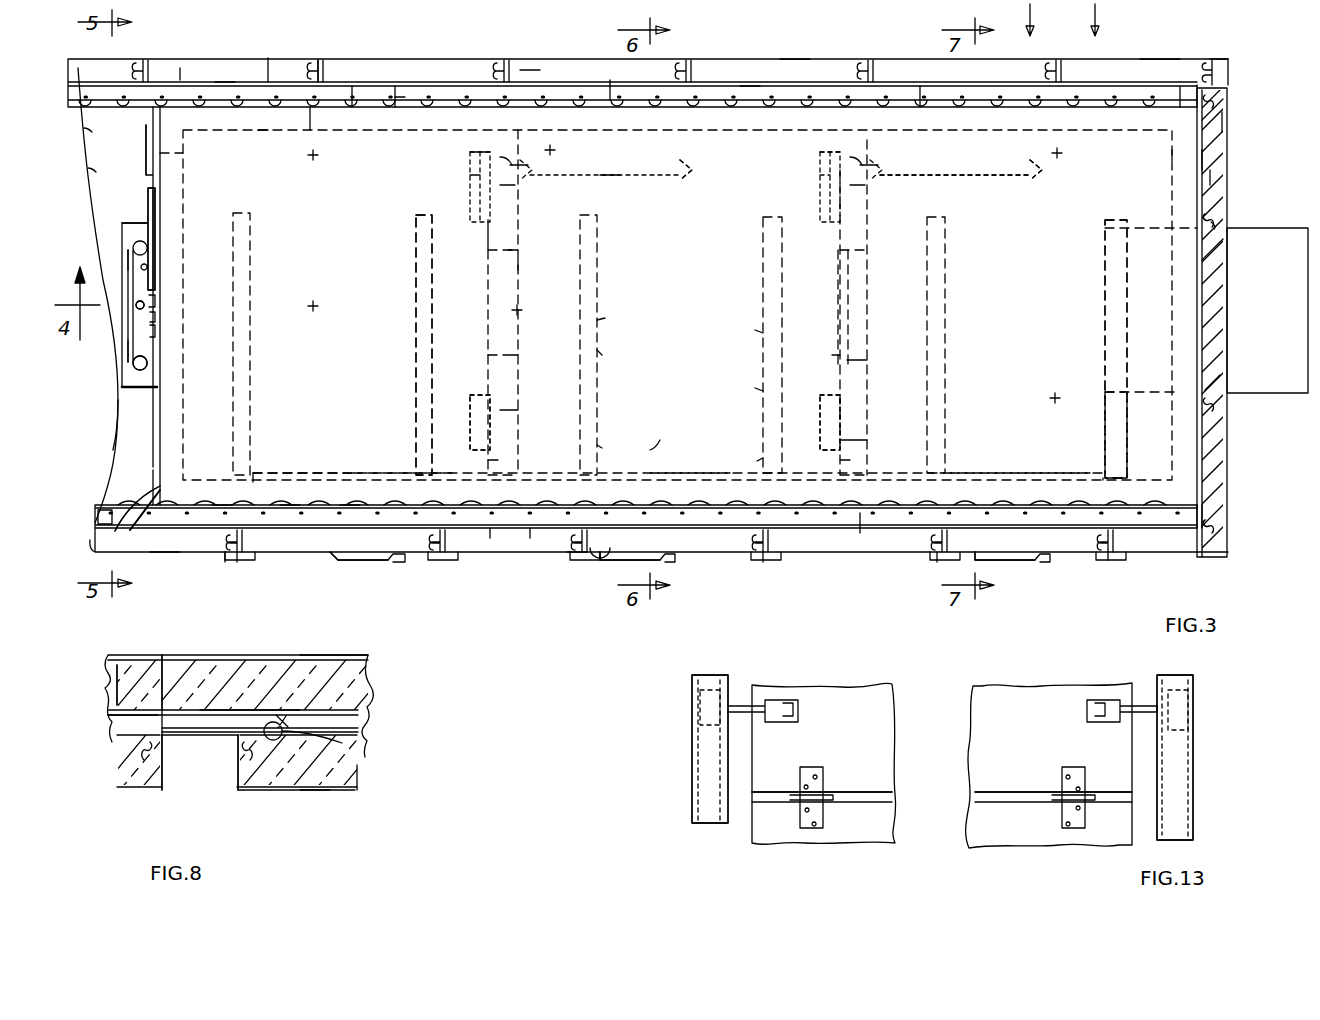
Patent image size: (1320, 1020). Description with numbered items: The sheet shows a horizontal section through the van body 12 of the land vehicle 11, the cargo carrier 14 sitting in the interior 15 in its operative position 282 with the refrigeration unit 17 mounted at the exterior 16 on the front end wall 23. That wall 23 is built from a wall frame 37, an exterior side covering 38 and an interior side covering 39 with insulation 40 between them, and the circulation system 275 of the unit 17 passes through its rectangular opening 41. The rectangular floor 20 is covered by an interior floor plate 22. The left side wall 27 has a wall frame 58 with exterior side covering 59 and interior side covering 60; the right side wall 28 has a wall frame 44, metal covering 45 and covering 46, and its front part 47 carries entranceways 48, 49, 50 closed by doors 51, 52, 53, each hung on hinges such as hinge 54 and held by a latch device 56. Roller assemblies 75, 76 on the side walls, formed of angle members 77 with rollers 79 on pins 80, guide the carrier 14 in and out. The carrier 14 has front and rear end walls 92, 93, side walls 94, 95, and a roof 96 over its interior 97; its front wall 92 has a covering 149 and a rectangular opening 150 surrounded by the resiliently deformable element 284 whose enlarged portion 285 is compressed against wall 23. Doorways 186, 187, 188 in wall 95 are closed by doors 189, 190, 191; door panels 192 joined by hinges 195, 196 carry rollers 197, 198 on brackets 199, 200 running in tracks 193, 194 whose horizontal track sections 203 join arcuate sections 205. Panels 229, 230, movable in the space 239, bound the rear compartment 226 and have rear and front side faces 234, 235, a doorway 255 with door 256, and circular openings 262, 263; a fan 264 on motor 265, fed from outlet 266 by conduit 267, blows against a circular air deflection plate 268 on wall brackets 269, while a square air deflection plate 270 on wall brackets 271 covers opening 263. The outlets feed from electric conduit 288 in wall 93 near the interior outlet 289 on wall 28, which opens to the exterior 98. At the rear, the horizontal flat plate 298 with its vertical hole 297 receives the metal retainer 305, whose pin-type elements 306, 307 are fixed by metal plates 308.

In FIG. 3, the land vehicle 11 is at (1227, 164).
In FIG. 3, the van body 12 is at (788, 59).
In FIG. 8, the van body 12 is at (330, 657).
In FIG. 3, the cargo carrier 14 is at (495, 105).
In FIG. 8, the cargo carrier 14 is at (292, 788).
In FIG. 3, the interior of the van body 15 is at (120, 423).
In FIG. 3, the exterior of the van body 16 is at (1195, 58).
In FIG. 3, the refrigeration unit 17 is at (1280, 228).
In FIG. 3, the floor 20 is at (84, 129).
In FIG. 3, the interior floor plate 22 is at (88, 170).
In FIG. 3, the front end wall 23 is at (1225, 118).
In FIG. 8, the front end wall 23 is at (280, 657).
In FIG. 3, the left side wall 27 is at (1140, 58).
In FIG. 3, the right side wall 28 is at (1197, 563).
In FIG. 3, the wall frame 37 is at (1219, 213).
In FIG. 3, the exterior side covering 38 is at (1223, 188).
In FIG. 8, the exterior side covering 38 is at (218, 657).
In FIG. 3, the interior side covering 39 is at (1197, 153).
In FIG. 8, the interior side covering 39 is at (116, 723).
In FIG. 3, the insulation 40 is at (1216, 210).
In FIG. 8, the insulation 40 is at (212, 657).
In FIG. 3, the rectangular opening 41 is at (1228, 368).
In FIG. 3, the wall frame 44 is at (222, 554).
In FIG. 3, the metal covering 45 is at (160, 552).
In FIG. 3, the covering 46 is at (218, 505).
In FIG. 3, the front part of side wall 47 is at (1138, 558).
In FIG. 3, the entranceway 48 is at (955, 558).
In FIG. 3, the entranceway 49 is at (616, 556).
In FIG. 3, the entranceway 50 is at (266, 555).
In FIG. 3, the door 51 is at (1022, 563).
In FIG. 3, the center door 52 is at (683, 555).
In FIG. 3, the door 53 is at (328, 555).
In FIG. 3, the hinge 54 is at (567, 555).
In FIG. 3, the latch device 56 is at (772, 560).
In FIG. 3, the wall frame 58 is at (321, 63).
In FIG. 3, the exterior side covering 59 is at (271, 63).
In FIG. 3, the interior side covering 60 is at (310, 107).
In FIG. 3, the roller assembly 75 is at (164, 75).
In FIG. 3, the roller assembly 76 is at (490, 537).
In FIG. 3, the angle member 77 is at (218, 80).
In FIG. 3, the roller 79 is at (352, 107).
In FIG. 3, the pin 80 is at (395, 99).
In FIG. 3, the front end wall of carrier 92 is at (1225, 142).
In FIG. 3, the rear end wall of carrier 93 is at (148, 130).
In FIG. 3, the left side wall of carrier 94 is at (396, 107).
In FIG. 3, the right side wall of carrier 95 is at (863, 520).
In FIG. 3, the roof 96 is at (745, 117).
In FIG. 8, the interior of carrier 97 is at (354, 788).
In FIG. 3, the exterior of carrier 98 is at (610, 107).
In FIG. 8, the exterior of carrier 98 is at (352, 717).
In FIG. 3, the covering 149 is at (1217, 270).
In FIG. 3, the rectangular opening 150 is at (1130, 331).
In FIG. 8, the rectangular opening 150 is at (242, 784).
In FIG. 3, the rear doorway 186 is at (390, 477).
In FIG. 3, the center doorway 187 is at (667, 480).
In FIG. 3, the front doorway 188 is at (1088, 480).
In FIG. 3, the door 189 is at (300, 473).
In FIG. 3, the door 190 is at (673, 433).
In FIG. 3, the door 191 is at (957, 473).
In FIG. 13, the door panel 192 is at (752, 830).
In FIG. 3, the track 193 is at (621, 346).
In FIG. 13, the track 193 is at (1194, 738).
In FIG. 3, the track 194 is at (758, 387).
In FIG. 13, the track 194 is at (692, 741).
In FIG. 13, the hinge 195 is at (820, 824).
In FIG. 13, the hinge 196 is at (1062, 822).
In FIG. 13, the roller 197 is at (698, 708).
In FIG. 13, the roller 198 is at (1197, 694).
In FIG. 13, the bracket 199 is at (802, 720).
In FIG. 13, the bracket 200 is at (1085, 724).
In FIG. 3, the horizontal track section 203 is at (600, 326).
In FIG. 3, the arcuate section 205 is at (608, 462).
In FIG. 3, the rear compartment 226 is at (257, 134).
In FIG. 3, the rear panel 229 is at (518, 253).
In FIG. 3, the front panel 230 is at (878, 244).
In FIG. 3, the rear side face 234 is at (488, 231).
In FIG. 3, the front side face 235 is at (518, 257).
In FIG. 3, the space 239 is at (397, 345).
In FIG. 3, the doorway 255 is at (518, 355).
In FIG. 3, the door 256 is at (485, 343).
In FIG. 3, the circular opening 262 is at (516, 187).
In FIG. 3, the circular opening 263 is at (513, 410).
In FIG. 3, the fan 264 is at (512, 162).
In FIG. 3, the electric motor 265 is at (519, 173).
In FIG. 3, the electrical outlet 266 is at (698, 153).
In FIG. 3, the electrical conduit 267 is at (650, 173).
In FIG. 3, the circular air deflection plate 268 is at (470, 181).
In FIG. 3, the wall bracket 269 is at (470, 150).
In FIG. 3, the square air deflection plate 270 is at (467, 409).
In FIG. 3, the wall bracket 271 is at (480, 460).
In FIG. 3, the circulation system 275 is at (1137, 435).
In FIG. 3, the operative position 282 is at (900, 117).
In FIG. 8, the resiliently deformable element 284 is at (170, 736).
In FIG. 8, the enlarged portion 285 is at (342, 743).
In FIG. 3, the electric conduit 288 is at (105, 492).
In FIG. 3, the interior outlet 289 is at (95, 515).
In FIG. 3, the vertical hole 297 is at (150, 306).
In FIG. 3, the horizontal flat plate 298 is at (122, 223).
In FIG. 3, the metal retainer 305 is at (128, 346).
In FIG. 3, the pin-type element 306 is at (148, 230).
In FIG. 3, the pin-type element 307 is at (122, 387).
In FIG. 3, the metal plate 308 is at (128, 250).